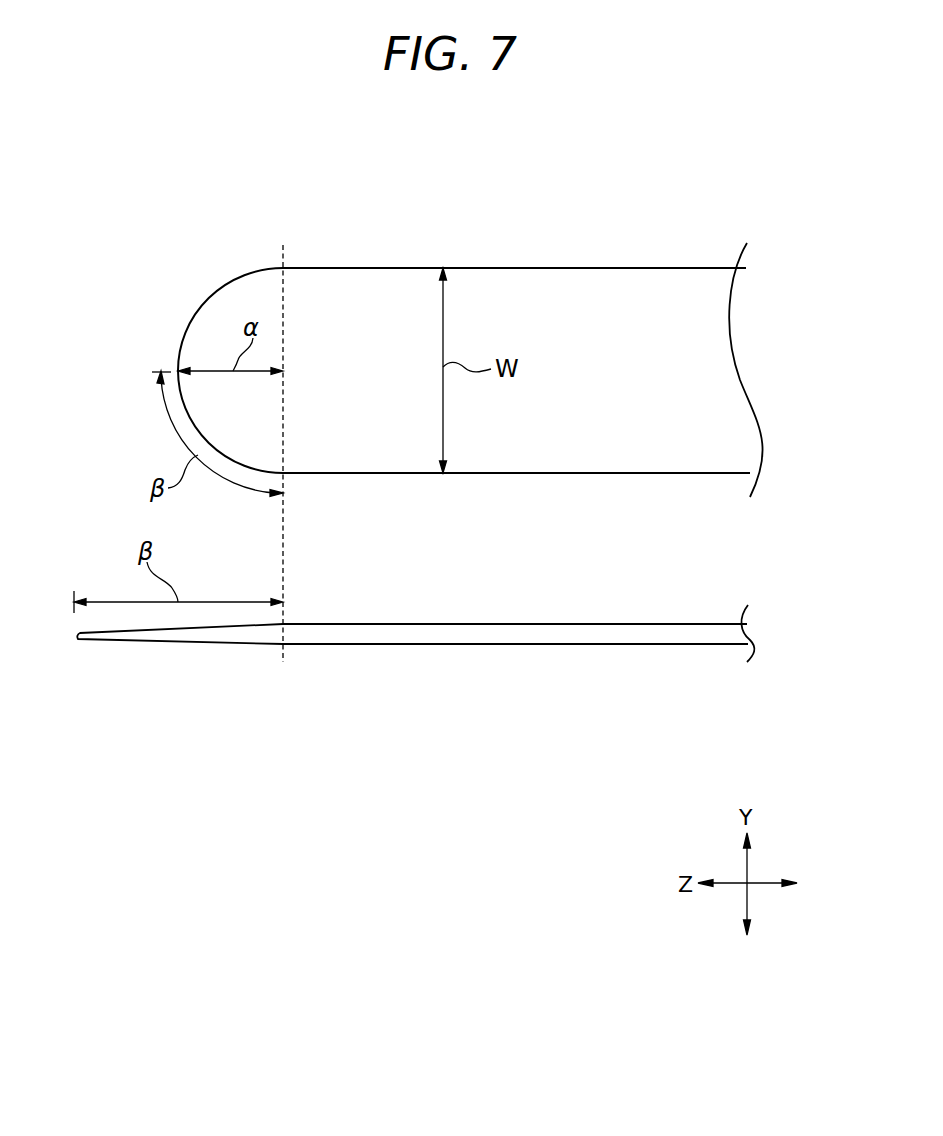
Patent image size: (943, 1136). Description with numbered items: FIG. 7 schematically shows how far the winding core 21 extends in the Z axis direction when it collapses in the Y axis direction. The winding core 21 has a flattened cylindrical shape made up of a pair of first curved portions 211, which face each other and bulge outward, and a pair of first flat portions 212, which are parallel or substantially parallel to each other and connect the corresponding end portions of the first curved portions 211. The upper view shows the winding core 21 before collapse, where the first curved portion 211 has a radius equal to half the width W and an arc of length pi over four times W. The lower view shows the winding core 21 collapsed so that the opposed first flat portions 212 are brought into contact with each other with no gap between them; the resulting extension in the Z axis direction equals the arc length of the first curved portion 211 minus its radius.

The winding core 21 is at (419, 454).
The first curved portion 211 is at (211, 295).
The first flat portion 212 is at (412, 267).